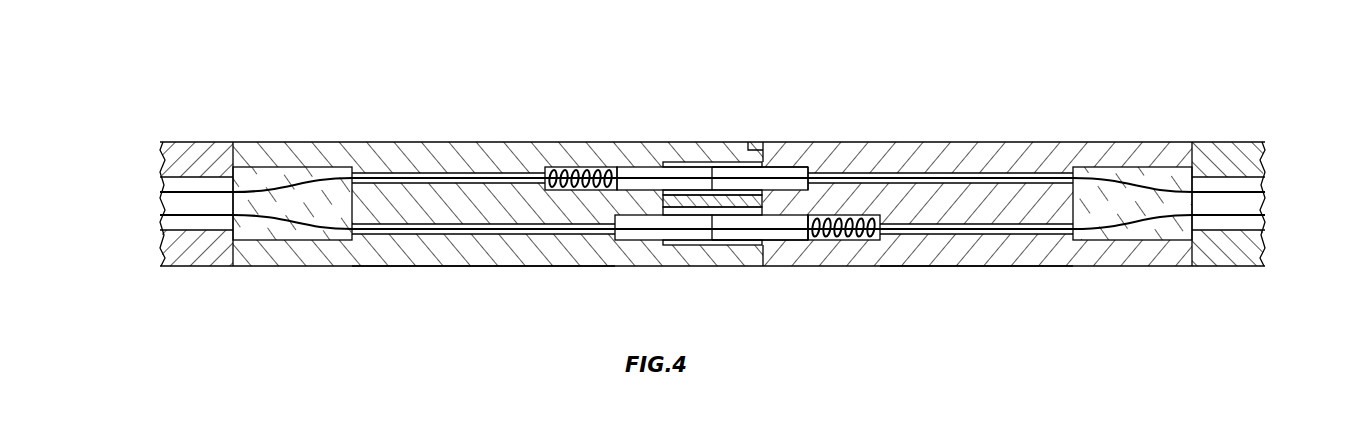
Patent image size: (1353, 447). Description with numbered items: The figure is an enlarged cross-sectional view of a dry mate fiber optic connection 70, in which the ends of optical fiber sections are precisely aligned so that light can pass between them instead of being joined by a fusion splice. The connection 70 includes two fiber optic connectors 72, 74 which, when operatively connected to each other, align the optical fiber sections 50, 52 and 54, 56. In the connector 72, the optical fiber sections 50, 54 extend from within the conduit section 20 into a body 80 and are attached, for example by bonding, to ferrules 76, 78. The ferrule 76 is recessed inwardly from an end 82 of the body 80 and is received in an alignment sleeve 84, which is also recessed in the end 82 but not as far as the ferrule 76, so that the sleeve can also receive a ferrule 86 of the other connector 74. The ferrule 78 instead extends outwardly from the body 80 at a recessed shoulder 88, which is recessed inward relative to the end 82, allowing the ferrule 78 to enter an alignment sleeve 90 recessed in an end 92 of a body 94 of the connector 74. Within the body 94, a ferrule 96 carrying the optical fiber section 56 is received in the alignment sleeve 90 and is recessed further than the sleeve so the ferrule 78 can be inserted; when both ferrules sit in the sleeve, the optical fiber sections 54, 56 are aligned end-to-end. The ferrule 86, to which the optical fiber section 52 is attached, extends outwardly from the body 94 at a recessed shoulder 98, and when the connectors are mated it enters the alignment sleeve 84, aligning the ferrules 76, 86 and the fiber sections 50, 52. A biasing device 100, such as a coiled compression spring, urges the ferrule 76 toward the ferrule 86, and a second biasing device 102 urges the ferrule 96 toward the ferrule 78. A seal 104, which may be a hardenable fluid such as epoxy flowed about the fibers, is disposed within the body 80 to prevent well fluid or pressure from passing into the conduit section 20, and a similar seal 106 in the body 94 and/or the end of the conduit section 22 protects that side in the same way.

The fiber optic connection 70 is at (1283, 107).
The conduit section 20 is at (175, 142).
The conduit section 22 is at (1242, 142).
The optical fiber section 50 is at (390, 176).
The optical fiber section 52 is at (1015, 178).
The optical fiber section 54 is at (412, 229).
The optical fiber section 56 is at (1060, 232).
The fiber optic connector 72 is at (455, 142).
The fiber optic connector 74 is at (940, 142).
The ferrule 76 is at (640, 167).
The ferrule 78 is at (628, 240).
The body 80 is at (518, 266).
The end 82 is at (771, 142).
The alignment sleeve 84 is at (683, 162).
The ferrule 86 is at (797, 167).
The recessed shoulder 88 is at (686, 245).
The alignment sleeve 90 is at (752, 240).
The end 92 is at (665, 245).
The body 94 is at (1008, 266).
The ferrule 96 is at (802, 240).
The recessed shoulder 98 is at (753, 142).
The biasing device 100 is at (577, 167).
The biasing device 102 is at (880, 240).
The seal 104 is at (267, 165).
The seal 106 is at (1177, 240).